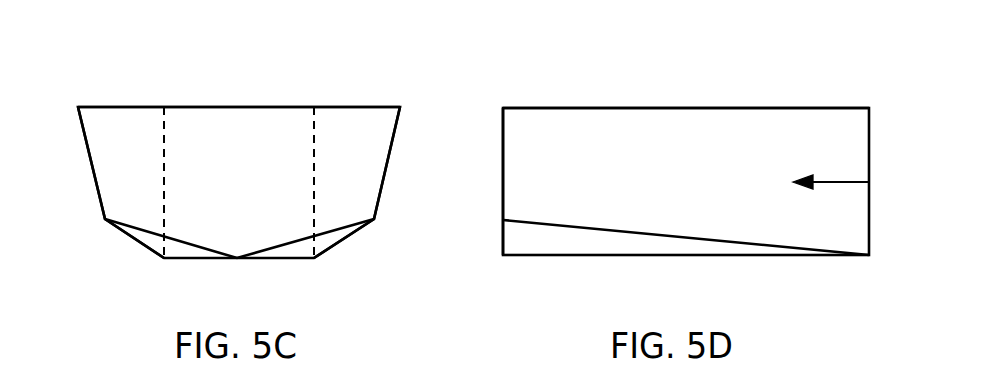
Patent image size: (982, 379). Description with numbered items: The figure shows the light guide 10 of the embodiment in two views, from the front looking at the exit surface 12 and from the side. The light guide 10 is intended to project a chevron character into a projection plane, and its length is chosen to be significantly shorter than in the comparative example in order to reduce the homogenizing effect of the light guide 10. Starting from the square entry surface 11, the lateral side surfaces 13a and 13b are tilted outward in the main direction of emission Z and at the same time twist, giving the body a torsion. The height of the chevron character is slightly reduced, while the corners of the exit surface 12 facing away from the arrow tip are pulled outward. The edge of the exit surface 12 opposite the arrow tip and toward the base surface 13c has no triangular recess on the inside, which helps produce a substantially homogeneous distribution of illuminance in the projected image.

In FIG. 5C, the light guide 10 is at (126, 107).
In FIG. 5D, the light guide 10 is at (806, 108).
In FIG. 5C, the entry surface 11 is at (315, 145).
In FIG. 5D, the entry surface 11 is at (868, 182).
In FIG. 5C, the exit surface 12 is at (259, 193).
In FIG. 5D, the exit surface 12 is at (502, 149).
In FIG. 5C, the lateral side surface 13a is at (93, 176).
In FIG. 5C, the lateral side surface 13b is at (387, 171).
In FIG. 5D, the lateral side surface 13b is at (705, 195).
In FIG. 5C, the base surface 13c is at (235, 107).
In FIG. 5D, the base surface 13c is at (655, 108).
In FIG. 5D, the main direction of emission Z is at (840, 182).